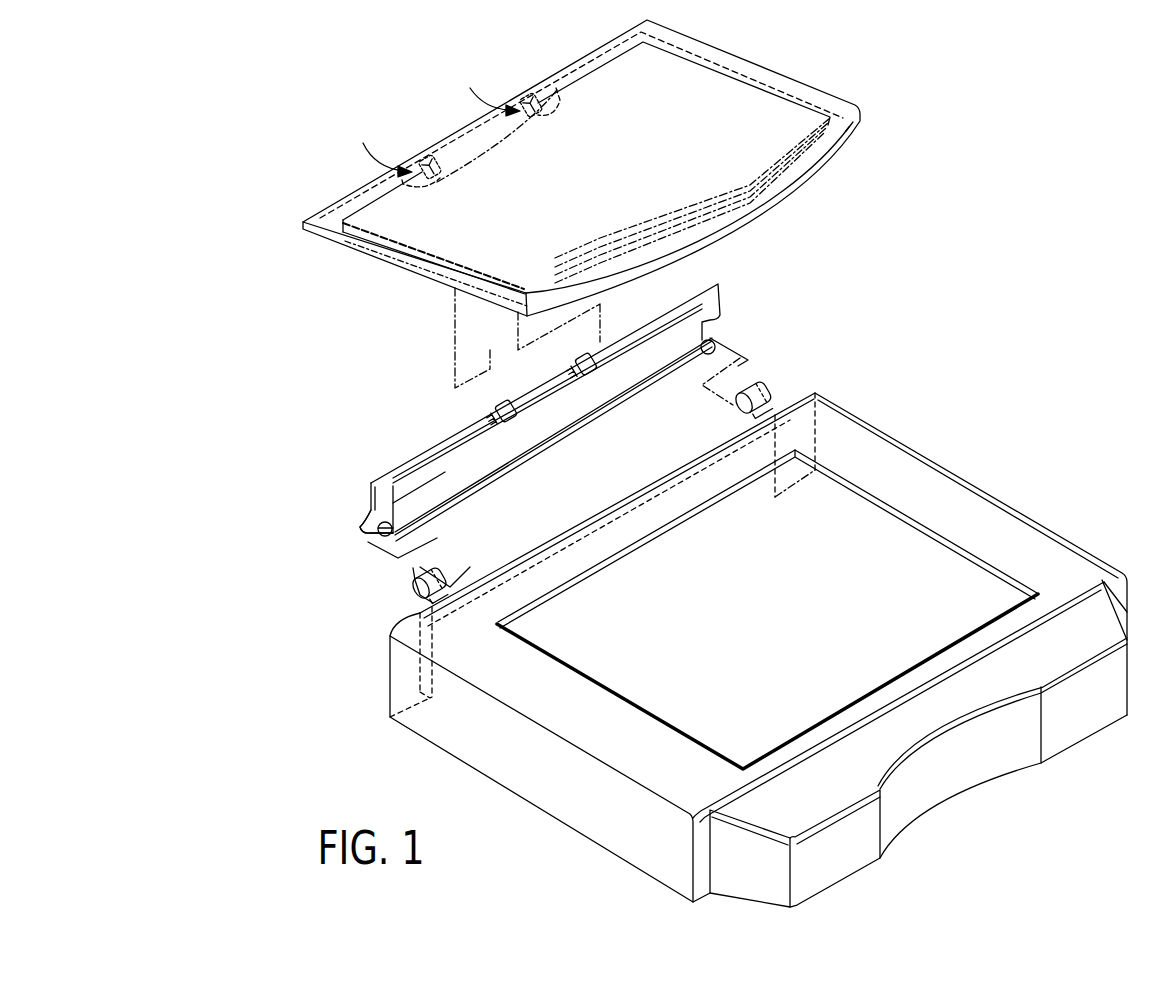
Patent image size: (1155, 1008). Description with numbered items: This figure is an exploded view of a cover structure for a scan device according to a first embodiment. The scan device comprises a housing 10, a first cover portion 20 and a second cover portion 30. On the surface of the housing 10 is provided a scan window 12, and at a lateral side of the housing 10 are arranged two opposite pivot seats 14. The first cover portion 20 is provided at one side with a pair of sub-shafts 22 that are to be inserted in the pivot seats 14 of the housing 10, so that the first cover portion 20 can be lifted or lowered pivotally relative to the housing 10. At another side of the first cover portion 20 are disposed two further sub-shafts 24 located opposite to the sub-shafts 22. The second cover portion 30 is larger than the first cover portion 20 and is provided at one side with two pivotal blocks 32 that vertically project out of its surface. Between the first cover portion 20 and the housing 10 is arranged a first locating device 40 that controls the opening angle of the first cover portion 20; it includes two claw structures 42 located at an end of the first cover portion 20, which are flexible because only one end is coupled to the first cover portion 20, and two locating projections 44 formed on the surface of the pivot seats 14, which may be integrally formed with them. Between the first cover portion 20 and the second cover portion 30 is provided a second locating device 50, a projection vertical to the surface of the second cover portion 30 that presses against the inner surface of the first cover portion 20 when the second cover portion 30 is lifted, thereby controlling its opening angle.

The housing 10 is at (928, 765).
The scan window 12 is at (653, 537).
The pivot seats 14 is at (437, 573).
The first cover portion 20 is at (563, 420).
The sub-shafts 22 is at (395, 543).
The sub-shafts 24 is at (507, 402).
The second cover portion 30 is at (437, 230).
The pivotal blocks 32 is at (421, 160).
The first locating device 40 is at (358, 579).
The claw structures 42 is at (360, 527).
The locating projections 44 is at (417, 580).
The second locating device 50 is at (428, 118).